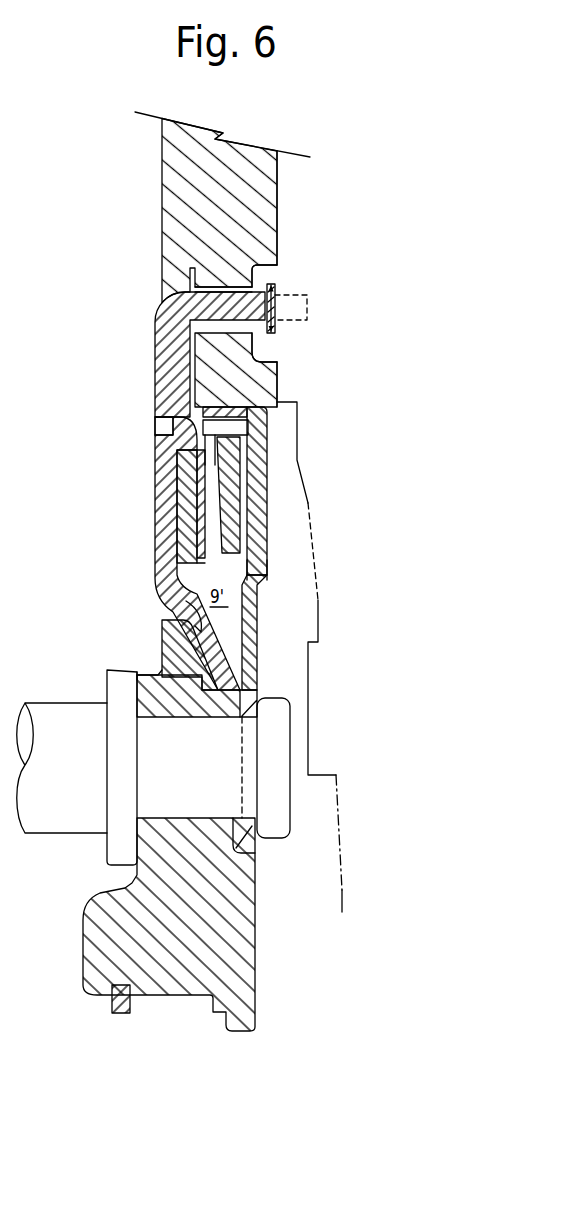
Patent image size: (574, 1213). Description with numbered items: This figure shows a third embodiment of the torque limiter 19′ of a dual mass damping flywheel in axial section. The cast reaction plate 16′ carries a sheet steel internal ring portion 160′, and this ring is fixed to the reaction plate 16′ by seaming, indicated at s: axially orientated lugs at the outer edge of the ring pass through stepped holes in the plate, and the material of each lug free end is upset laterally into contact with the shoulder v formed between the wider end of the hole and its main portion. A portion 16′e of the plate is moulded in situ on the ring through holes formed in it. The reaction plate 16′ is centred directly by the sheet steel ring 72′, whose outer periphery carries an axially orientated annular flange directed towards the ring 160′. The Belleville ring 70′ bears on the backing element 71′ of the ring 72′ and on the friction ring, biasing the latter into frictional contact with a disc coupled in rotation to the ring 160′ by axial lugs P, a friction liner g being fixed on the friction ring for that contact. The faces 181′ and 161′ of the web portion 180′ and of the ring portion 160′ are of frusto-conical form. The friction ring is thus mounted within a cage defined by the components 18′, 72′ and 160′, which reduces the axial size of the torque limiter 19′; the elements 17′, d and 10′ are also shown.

The reaction plate 16′ is at (281, 173).
The housing face 17′ is at (278, 208).
The shoulder v is at (267, 270).
The seaming s is at (273, 284).
The portion of the plate 16′e is at (278, 372).
The diameter d is at (208, 427).
The torque limiter 19′ is at (153, 468).
The meshing means P is at (165, 425).
The internal ring 160′ is at (166, 498).
The friction liner g is at (196, 557).
The Belleville ring 70′ is at (228, 530).
The backing element 71′ is at (260, 496).
The ring 72′ is at (256, 610).
The face of the web portion 181′ is at (172, 606).
The web portion 180′ is at (160, 640).
The flange 10′ is at (244, 686).
The face of the ring portion 161′ is at (136, 672).
The hub 18′ is at (245, 957).